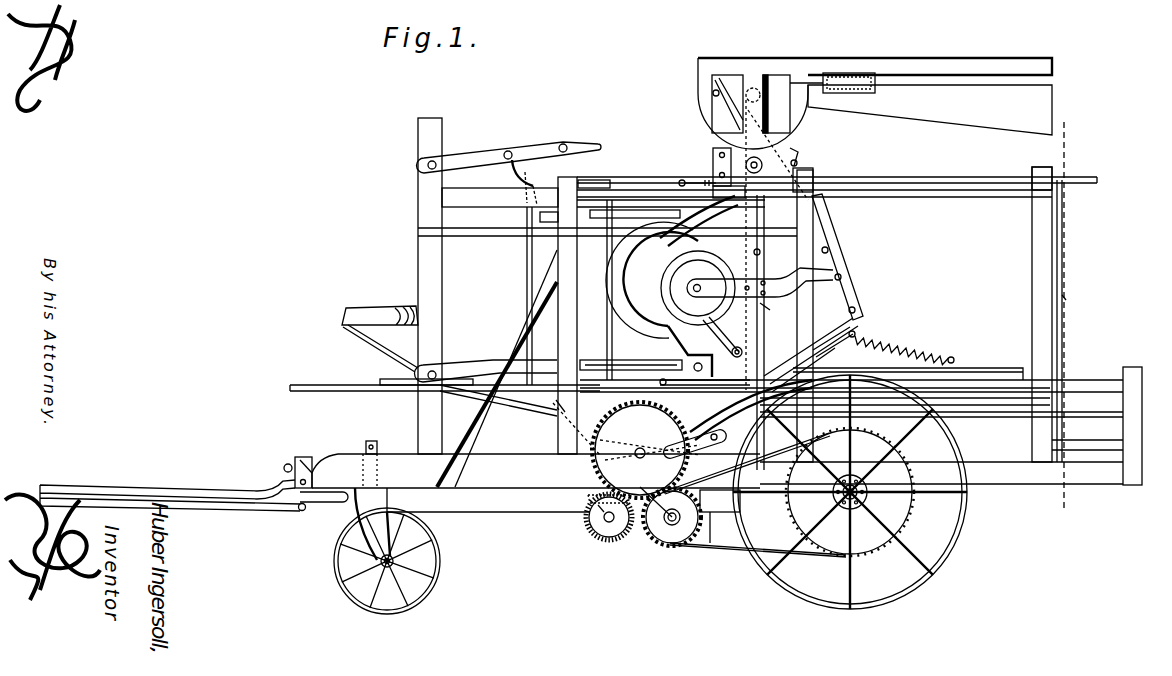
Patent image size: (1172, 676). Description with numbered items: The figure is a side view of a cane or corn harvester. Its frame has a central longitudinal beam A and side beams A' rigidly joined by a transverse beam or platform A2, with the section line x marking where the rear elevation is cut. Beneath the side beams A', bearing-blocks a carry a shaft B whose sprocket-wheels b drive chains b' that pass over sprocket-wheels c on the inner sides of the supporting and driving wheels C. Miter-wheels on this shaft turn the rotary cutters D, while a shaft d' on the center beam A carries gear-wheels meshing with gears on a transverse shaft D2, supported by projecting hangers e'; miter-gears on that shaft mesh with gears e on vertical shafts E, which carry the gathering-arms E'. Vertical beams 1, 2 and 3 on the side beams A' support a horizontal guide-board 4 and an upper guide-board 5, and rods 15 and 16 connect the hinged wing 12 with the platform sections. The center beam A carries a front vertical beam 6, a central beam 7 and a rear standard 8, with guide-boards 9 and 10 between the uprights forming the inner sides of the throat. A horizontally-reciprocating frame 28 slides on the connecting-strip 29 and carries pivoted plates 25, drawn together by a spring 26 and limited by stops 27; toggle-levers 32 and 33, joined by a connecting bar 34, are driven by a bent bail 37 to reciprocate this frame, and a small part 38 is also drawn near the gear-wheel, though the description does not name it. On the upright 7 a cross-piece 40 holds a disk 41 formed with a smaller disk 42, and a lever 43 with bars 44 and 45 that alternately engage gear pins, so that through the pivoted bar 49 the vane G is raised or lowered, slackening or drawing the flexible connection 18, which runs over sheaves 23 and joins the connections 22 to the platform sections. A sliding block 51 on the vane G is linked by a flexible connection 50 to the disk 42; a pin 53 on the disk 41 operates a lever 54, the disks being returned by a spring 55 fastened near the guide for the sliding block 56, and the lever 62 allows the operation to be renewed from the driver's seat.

The central longitudinal beam A is at (400, 476).
The side beams A' is at (811, 473).
The transverse beam or platform A2 is at (720, 516).
The shaft B is at (672, 526).
The sprocket-wheels b is at (737, 499).
The chains b' is at (758, 555).
The supporting and driving wheels C is at (975, 510).
The sprocket-wheels c is at (897, 500).
The rotary cutters D is at (646, 450).
The shaft d' is at (633, 459).
The transverse shaft D2 is at (609, 524).
The bearing-blocks a is at (658, 487).
The gears e is at (596, 495).
The projecting hangers e' is at (583, 514).
The shafts E is at (597, 290).
The gathering-arms E' is at (631, 290).
The pivoted arm or vane G is at (824, 62).
The vertical beam 1 is at (507, 332).
The vertical beam 2 is at (805, 316).
The vertical beam 3 is at (1042, 314).
The horizontal guide-board 4 is at (983, 372).
The guide-board 5 is at (920, 196).
The front vertical beam 6 is at (416, 131).
The central beam 7 is at (756, 243).
The rear standard 8 is at (1143, 431).
The guide-boards or frames 9 is at (445, 394).
The guide-boards or frames 10 is at (479, 232).
The hinged boards or wings 12 is at (1000, 419).
The rods 15 is at (1075, 295).
The rods 16 is at (1064, 433).
The flexible connection 18 is at (774, 304).
The flexible connections 22 is at (906, 180).
The grooved rollers or sheaves 23 is at (760, 245).
The pivoted horizontal plates 25 is at (705, 285).
The spring 26 is at (685, 179).
The stops 27 is at (704, 183).
The horizontally-reciprocating frame 28 is at (641, 283).
The connecting-strip 29 is at (603, 201).
The toggle-lever 32 is at (515, 150).
The toggle-lever 33 is at (486, 371).
The connecting bar or link 34 is at (526, 286).
The bent bail 37 is at (553, 413).
The lever plate 38 is at (692, 444).
The longitudinal cross-piece 40 is at (760, 282).
The disk 41 is at (690, 252).
The smaller disk 42 is at (698, 288).
The lever 43 is at (840, 263).
The bar 44 is at (834, 342).
The bar 45 is at (811, 355).
The pivoted bar 49 is at (790, 157).
The flexible connection 50 is at (742, 255).
The sliding block 51 is at (832, 83).
The pin 53 is at (717, 336).
The lever 54 is at (724, 348).
The spring 55 is at (885, 345).
The block 56 is at (751, 405).
The lever 62 is at (512, 405).
The section line x is at (1061, 317).